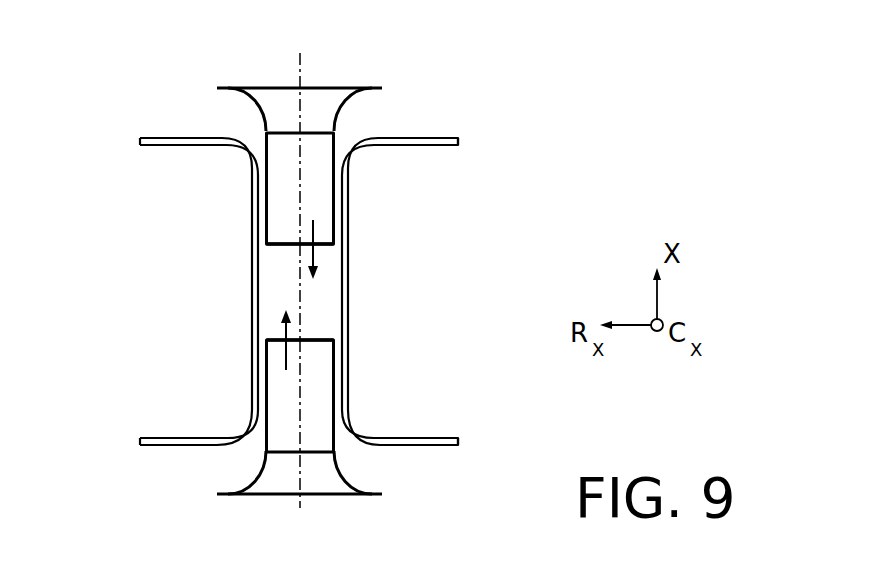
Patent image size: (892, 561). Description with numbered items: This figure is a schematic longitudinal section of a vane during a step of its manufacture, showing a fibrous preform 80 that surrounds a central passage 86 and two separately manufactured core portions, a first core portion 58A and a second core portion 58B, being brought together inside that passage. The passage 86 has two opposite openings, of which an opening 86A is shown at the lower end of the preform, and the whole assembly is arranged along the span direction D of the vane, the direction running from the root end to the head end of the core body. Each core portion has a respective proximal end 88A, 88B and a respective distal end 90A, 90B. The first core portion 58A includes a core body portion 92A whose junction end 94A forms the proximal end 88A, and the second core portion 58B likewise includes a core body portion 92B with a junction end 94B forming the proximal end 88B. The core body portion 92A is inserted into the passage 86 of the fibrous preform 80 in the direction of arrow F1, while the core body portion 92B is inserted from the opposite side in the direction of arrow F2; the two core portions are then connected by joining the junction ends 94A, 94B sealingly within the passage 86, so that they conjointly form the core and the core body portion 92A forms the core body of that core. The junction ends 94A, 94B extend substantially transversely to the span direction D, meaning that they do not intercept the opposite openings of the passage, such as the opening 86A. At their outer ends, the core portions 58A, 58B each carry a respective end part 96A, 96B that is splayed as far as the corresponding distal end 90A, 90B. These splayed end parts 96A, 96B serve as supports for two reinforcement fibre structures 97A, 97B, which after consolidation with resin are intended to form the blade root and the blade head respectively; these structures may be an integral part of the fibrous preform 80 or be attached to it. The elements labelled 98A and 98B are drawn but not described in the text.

The span direction D is at (297, 62).
The fibrous preform 80 is at (366, 306).
The passage 86 is at (280, 287).
The opening 86A is at (258, 428).
The proximal end 88A is at (283, 247).
The junction end 94A is at (283, 247).
The proximal end 88B is at (318, 340).
The junction end 94B is at (408, 335).
The distal end 90A is at (336, 90).
The distal end 90B is at (350, 496).
The core body portion 92A is at (345, 188).
The core body portion 92B is at (347, 362).
The end part 96A is at (355, 92).
The end part 96B is at (344, 477).
The reinforcement fibre structure 97A is at (447, 145).
The reinforcement fibre structure 97B is at (415, 438).
The inner tube 98A is at (270, 155).
The inner tube 98B is at (270, 370).
The first core portion 58A is at (340, 140).
The second core portion 58B is at (342, 392).
The arrow F1 is at (337, 252).
The arrow F2 is at (263, 330).